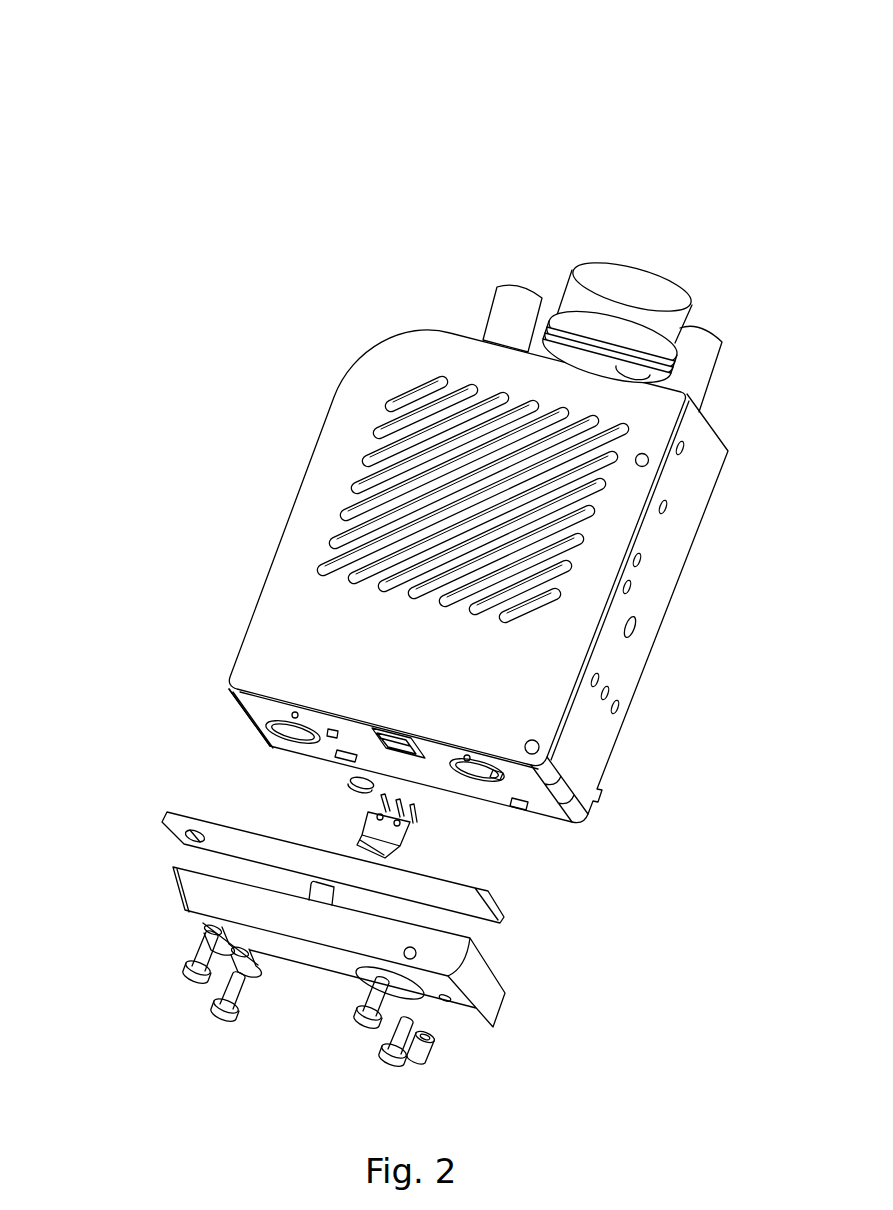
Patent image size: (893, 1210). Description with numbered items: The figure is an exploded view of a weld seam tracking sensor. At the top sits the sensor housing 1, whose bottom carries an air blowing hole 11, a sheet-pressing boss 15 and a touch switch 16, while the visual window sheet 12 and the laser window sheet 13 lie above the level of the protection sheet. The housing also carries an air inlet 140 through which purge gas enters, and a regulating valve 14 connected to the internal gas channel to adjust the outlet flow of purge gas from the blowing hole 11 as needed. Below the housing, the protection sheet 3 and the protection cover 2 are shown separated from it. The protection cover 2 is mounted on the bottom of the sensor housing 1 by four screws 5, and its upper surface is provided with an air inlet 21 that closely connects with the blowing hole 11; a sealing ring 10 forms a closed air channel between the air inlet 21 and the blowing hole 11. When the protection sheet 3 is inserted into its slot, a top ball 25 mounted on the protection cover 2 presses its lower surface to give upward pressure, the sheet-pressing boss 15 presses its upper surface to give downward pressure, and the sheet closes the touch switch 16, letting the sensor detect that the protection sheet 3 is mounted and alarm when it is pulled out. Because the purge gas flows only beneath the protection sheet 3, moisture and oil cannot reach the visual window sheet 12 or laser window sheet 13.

The sensor housing 1 is at (325, 487).
The regulating valve 14 is at (688, 347).
The air inlet 140 is at (500, 315).
The laser window sheet 13 is at (233, 700).
The sheet-pressing boss 15 is at (310, 710).
The air blowing hole 11 is at (373, 727).
The visual window sheet 12 is at (505, 777).
The sealing ring 10 is at (350, 783).
The touch switch 16 is at (380, 833).
The protection sheet 3 is at (467, 907).
The protection cover 2 is at (403, 919).
The air inlet 21 is at (205, 862).
The screws 5 is at (382, 1055).
The top ball 25 is at (437, 1053).